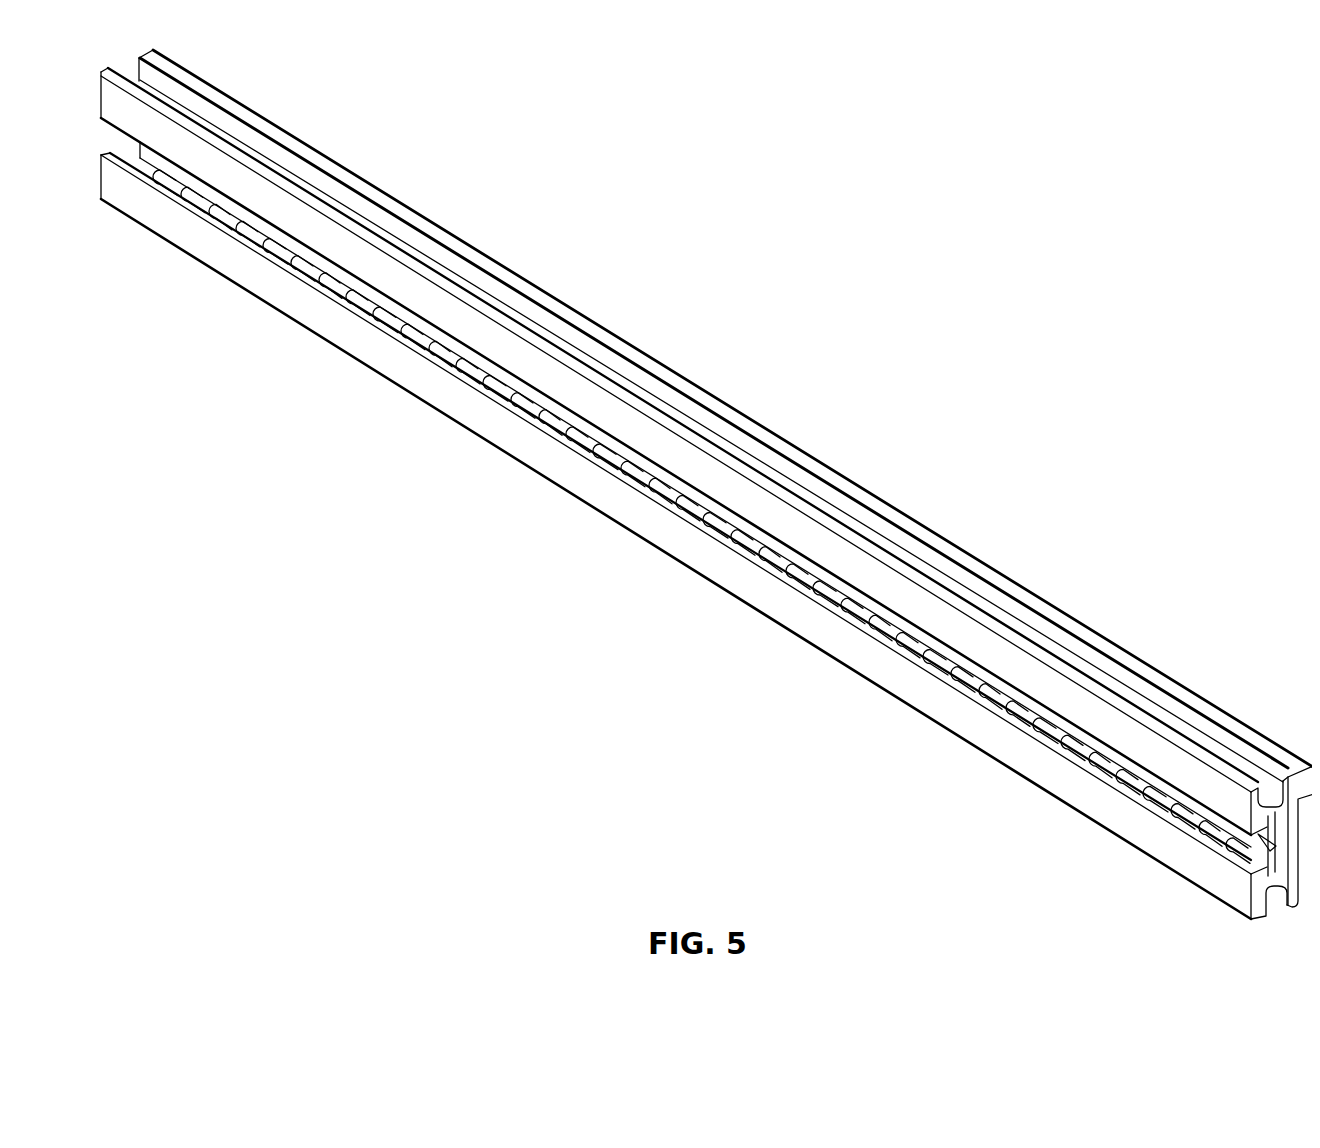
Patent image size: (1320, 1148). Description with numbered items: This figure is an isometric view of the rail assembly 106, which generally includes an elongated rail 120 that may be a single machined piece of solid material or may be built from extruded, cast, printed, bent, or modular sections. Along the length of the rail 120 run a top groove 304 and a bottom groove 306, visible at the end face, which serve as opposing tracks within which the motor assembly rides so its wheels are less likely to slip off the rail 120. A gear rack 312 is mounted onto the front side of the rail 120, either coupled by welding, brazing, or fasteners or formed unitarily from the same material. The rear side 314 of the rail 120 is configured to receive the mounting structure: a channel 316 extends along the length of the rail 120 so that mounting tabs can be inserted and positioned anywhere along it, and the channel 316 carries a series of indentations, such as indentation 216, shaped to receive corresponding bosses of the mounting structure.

The rail assembly 106 is at (706, 484).
The rail 120 is at (560, 380).
The gear rack 312 is at (766, 418).
The rear side 314 is at (766, 628).
The channel 316 is at (478, 376).
The indentation 216 is at (586, 452).
The top groove 304 is at (1262, 790).
The bottom groove 306 is at (1270, 886).